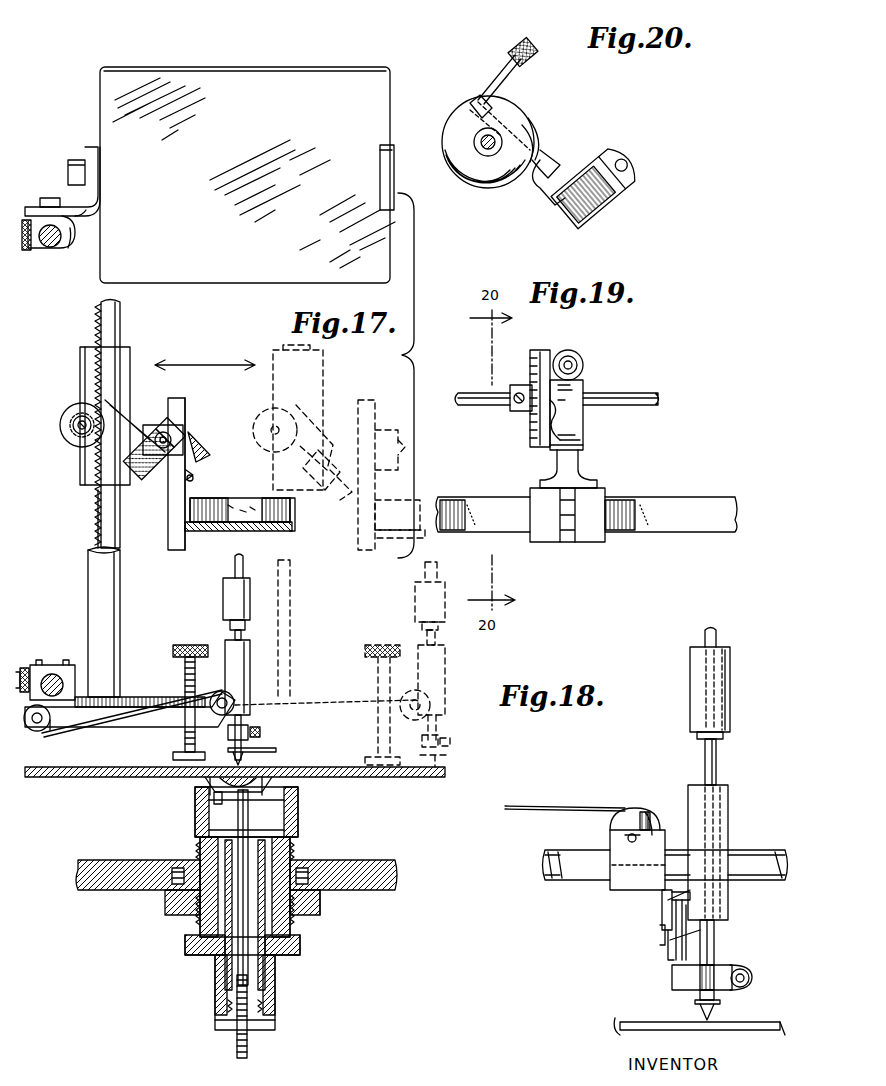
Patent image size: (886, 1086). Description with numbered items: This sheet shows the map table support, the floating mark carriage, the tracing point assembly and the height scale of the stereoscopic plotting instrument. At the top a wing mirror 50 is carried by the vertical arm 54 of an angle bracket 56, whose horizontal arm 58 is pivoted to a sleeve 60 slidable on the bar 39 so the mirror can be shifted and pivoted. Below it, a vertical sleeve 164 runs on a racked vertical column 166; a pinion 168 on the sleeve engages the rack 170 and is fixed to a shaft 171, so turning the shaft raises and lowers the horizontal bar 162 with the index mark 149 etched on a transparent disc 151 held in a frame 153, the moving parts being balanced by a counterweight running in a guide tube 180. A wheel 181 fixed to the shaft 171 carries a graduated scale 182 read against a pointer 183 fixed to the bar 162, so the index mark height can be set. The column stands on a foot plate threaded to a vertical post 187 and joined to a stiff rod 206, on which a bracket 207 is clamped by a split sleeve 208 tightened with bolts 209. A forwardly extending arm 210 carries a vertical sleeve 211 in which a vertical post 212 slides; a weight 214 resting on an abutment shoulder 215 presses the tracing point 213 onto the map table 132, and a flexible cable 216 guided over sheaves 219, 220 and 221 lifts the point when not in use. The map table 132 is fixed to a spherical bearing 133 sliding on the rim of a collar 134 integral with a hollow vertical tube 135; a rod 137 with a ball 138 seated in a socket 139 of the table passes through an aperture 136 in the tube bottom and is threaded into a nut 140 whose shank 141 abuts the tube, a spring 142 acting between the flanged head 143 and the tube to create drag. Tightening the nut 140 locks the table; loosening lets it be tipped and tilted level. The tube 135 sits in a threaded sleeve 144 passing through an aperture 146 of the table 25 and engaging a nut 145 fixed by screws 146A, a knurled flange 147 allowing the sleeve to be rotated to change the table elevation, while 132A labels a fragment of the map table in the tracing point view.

In FIG. 17, the wing mirror 50 is at (247, 175).
In FIG. 17, the vertical arm 54 is at (88, 147).
In FIG. 17, the angle bracket 56 is at (75, 205).
In FIG. 17, the horizontal arm 58 is at (86, 218).
In FIG. 17, the sleeve 60 is at (72, 248).
In FIG. 17, the bar 39 is at (46, 246).
In FIG. 17, the racked vertical column 166 is at (121, 325).
In FIG. 17, the vertical sleeve 164 is at (80, 352).
In FIG. 17, the pinion 168 is at (78, 402).
In FIG. 17, the shaft 171 is at (65, 440).
In FIG. 20, the shaft 171 is at (486, 147).
In FIG. 19, the shaft 171 is at (632, 395).
In FIG. 17, the rack 170 is at (93, 505).
In FIG. 17, the horizontal bar 162 is at (150, 488).
In FIG. 20, the horizontal bar 162 is at (605, 216).
In FIG. 19, the horizontal bar 162 is at (655, 500).
In FIG. 17, the index mark 149 is at (243, 498).
In FIG. 17, the transparent disc 151 is at (266, 531).
In FIG. 17, the frame 153 is at (296, 512).
In FIG. 17, the vertical guide tube 180 is at (121, 590).
In FIG. 17, the sheave 221 is at (24, 668).
In FIG. 18, the sheave 221 is at (642, 810).
In FIG. 17, the bolt 209 is at (72, 665).
In FIG. 17, the stiff rod 206 is at (52, 673).
In FIG. 18, the stiff rod 206 is at (758, 849).
In FIG. 17, the split sleeve 208 is at (72, 692).
In FIG. 17, the flexible cable 216 is at (130, 712).
In FIG. 18, the flexible cable 216 is at (572, 805).
In FIG. 17, the vertical post 187 is at (182, 645).
In FIG. 17, the bracket 207 is at (55, 727).
In FIG. 17, the forwardly extending arm 210 is at (165, 728).
In FIG. 17, the sheave 220 is at (37, 732).
In FIG. 18, the sheave 220 is at (668, 943).
In FIG. 17, the sheave 219 is at (235, 703).
In FIG. 18, the sheave 219 is at (668, 897).
In FIG. 17, the vertical post 212 is at (234, 560).
In FIG. 18, the vertical post 212 is at (713, 618).
In FIG. 17, the weight 214 is at (224, 588).
In FIG. 18, the weight 214 is at (731, 670).
In FIG. 17, the abutment shoulder 215 is at (230, 622).
In FIG. 18, the abutment shoulder 215 is at (724, 738).
In FIG. 17, the vertical sleeve 211 is at (250, 665).
In FIG. 18, the vertical sleeve 211 is at (729, 800).
In FIG. 17, the tracing point 213 is at (250, 748).
In FIG. 18, the tracing point 213 is at (712, 1018).
In FIG. 17, the socket 139 is at (262, 775).
In FIG. 17, the map table 132 is at (405, 778).
In FIG. 17, the spherical bearing 133 is at (290, 777).
In FIG. 17, the collar 134 is at (200, 791).
In FIG. 17, the ball 138 is at (214, 800).
In FIG. 17, the hollow vertical tube 135 is at (284, 822).
In FIG. 17, the aperture 146 is at (200, 862).
In FIG. 17, the sleeve 144 is at (291, 853).
In FIG. 17, the screw 146A is at (340, 858).
In FIG. 17, the table 25 is at (370, 862).
In FIG. 17, the nut 145 is at (321, 905).
In FIG. 17, the knurled flange 147 is at (300, 944).
In FIG. 17, the aperture 136 is at (225, 990).
In FIG. 17, the rod 137 is at (250, 960).
In FIG. 17, the spring 142 is at (227, 1010).
In FIG. 17, the shank 141 is at (265, 1012).
In FIG. 17, the flanged head 143 is at (215, 1024).
In FIG. 17, the nut 140 is at (264, 1032).
In FIG. 20, the wheel 181 is at (500, 182).
In FIG. 19, the wheel 181 is at (531, 362).
In FIG. 20, the pointer 183 is at (545, 132).
In FIG. 19, the pointer 183 is at (540, 408).
In FIG. 19, the graduated scale 182 is at (565, 352).
In FIG. 18, the base plate 132A is at (615, 1018).